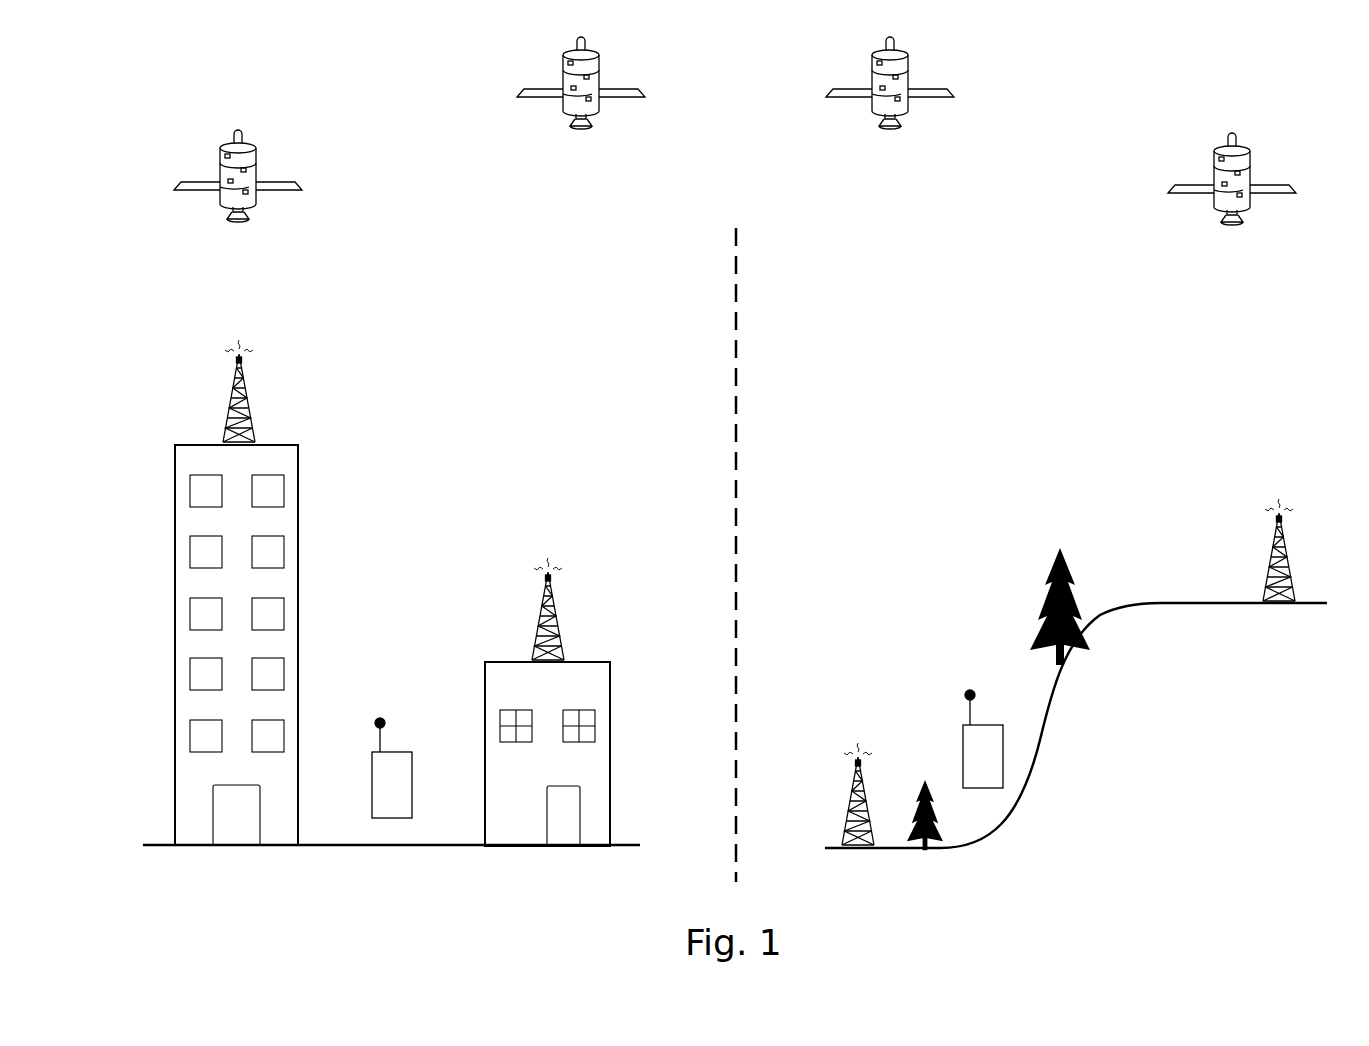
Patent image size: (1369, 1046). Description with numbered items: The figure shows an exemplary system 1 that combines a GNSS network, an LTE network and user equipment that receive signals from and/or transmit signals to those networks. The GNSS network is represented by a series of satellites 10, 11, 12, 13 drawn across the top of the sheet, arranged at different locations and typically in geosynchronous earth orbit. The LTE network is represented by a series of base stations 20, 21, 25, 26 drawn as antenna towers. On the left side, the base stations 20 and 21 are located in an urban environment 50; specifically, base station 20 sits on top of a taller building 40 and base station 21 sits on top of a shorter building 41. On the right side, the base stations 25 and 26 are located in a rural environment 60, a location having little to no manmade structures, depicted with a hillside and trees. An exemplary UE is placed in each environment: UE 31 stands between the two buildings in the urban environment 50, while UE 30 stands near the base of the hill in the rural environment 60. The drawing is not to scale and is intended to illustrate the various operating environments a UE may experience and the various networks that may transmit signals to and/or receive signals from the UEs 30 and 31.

The system 1 is at (1046, 137).
The satellite 10 is at (238, 196).
The satellite 11 is at (581, 104).
The satellite 12 is at (890, 104).
The satellite 13 is at (1232, 200).
The base station 20 is at (268, 390).
The base station 21 is at (523, 576).
The base station 25 is at (834, 773).
The base station 26 is at (1247, 533).
The UE 30 is at (983, 739).
The UE 31 is at (392, 768).
The building 40 is at (322, 490).
The building 41 is at (470, 678).
The urban environment 50 is at (391, 873).
The rural environment 60 is at (1076, 727).